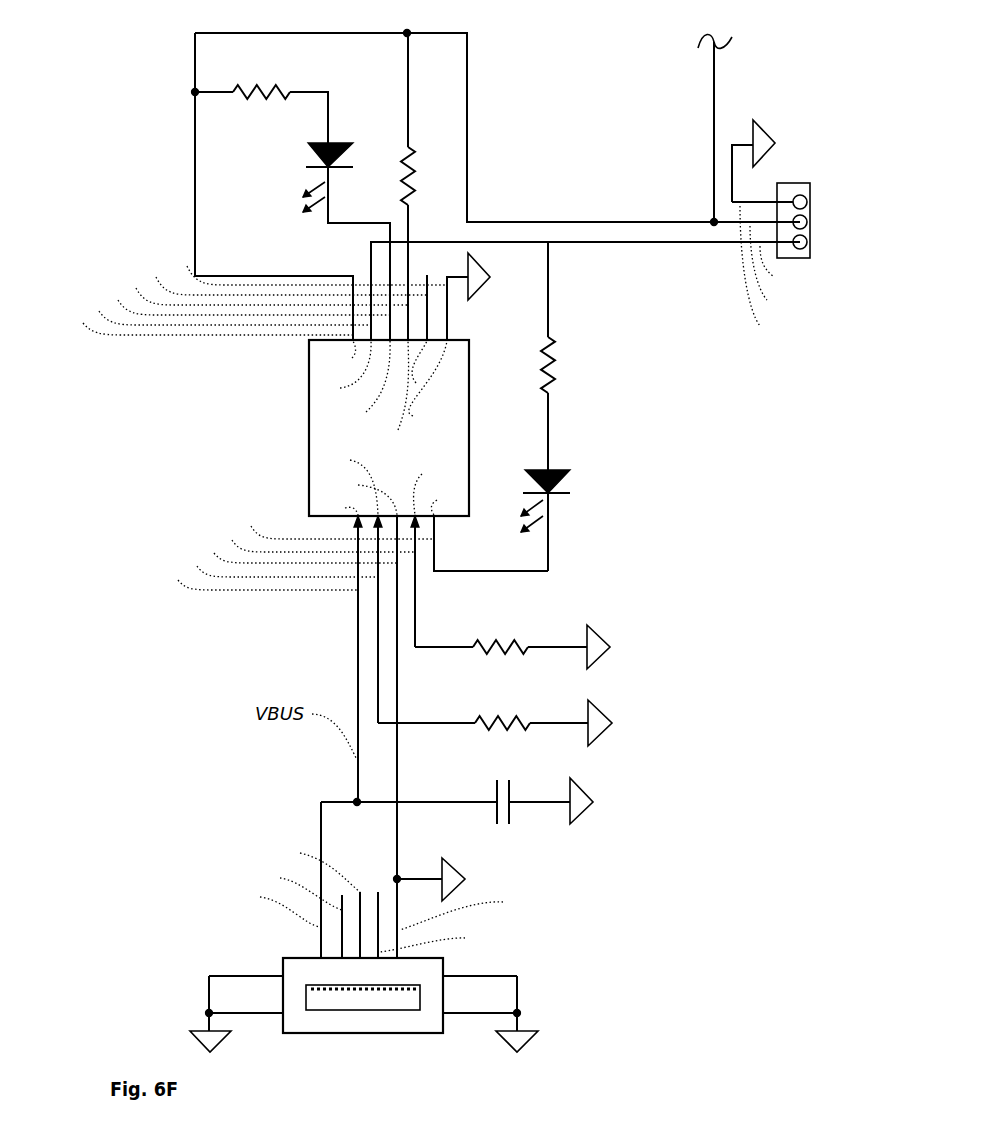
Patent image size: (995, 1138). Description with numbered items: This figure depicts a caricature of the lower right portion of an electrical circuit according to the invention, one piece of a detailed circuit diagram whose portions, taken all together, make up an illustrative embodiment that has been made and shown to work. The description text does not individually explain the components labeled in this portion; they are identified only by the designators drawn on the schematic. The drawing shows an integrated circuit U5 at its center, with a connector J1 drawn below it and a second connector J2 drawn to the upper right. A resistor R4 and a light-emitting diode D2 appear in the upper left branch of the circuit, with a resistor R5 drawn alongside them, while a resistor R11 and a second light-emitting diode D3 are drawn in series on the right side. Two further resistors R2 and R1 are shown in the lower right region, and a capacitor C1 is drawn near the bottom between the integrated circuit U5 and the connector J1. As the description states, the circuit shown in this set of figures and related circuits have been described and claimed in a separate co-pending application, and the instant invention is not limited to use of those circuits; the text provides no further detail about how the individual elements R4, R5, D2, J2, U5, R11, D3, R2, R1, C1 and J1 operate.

The resistor R4 1.5K R4 is at (258, 81).
The resistor R5 1.0K R5 is at (420, 175).
The yellow LED D2 is at (295, 166).
The connector J2 53015-0310 J2 is at (790, 182).
The battery charger IC U5 BQ24090 U5 is at (309, 432).
The resistor R11 1.5K R11 is at (560, 370).
The green LED D3 is at (577, 483).
The resistor R2 2.0K R2 is at (513, 632).
The resistor R1 1.0K R1 is at (507, 710).
The capacitor C1 1.0uF C1 is at (506, 827).
The USB connector J1 1734035-2 J1 is at (285, 958).